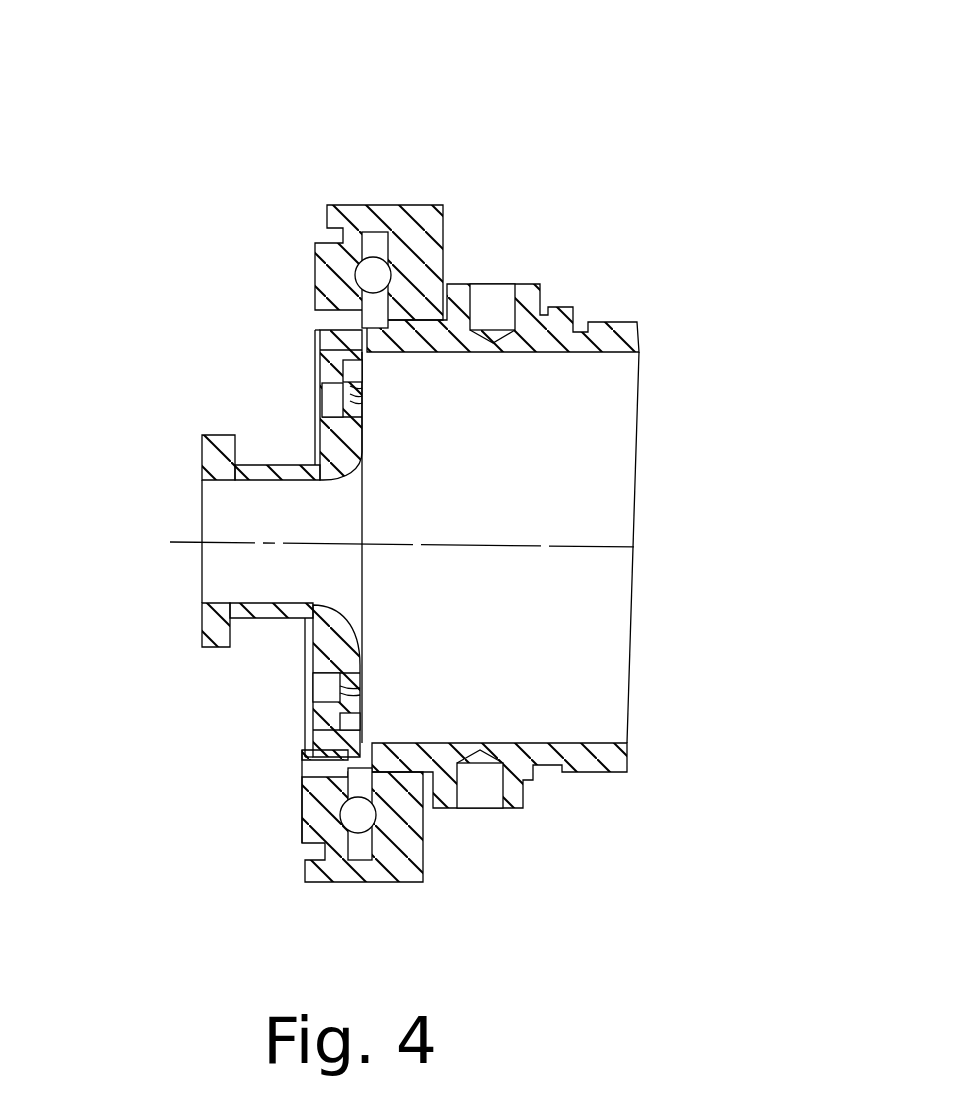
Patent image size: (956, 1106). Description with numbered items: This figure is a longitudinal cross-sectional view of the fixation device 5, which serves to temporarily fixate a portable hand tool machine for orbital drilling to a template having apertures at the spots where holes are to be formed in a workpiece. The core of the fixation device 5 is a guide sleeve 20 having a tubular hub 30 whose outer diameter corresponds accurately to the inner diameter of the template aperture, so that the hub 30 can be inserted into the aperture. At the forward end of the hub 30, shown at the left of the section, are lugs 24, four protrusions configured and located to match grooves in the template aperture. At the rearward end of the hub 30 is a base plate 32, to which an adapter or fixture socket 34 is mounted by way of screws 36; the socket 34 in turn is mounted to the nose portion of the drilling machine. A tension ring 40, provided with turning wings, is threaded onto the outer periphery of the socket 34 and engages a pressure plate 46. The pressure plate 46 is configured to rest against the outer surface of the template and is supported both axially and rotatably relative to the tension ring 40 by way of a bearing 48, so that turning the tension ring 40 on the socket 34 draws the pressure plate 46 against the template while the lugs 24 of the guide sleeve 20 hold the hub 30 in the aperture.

The fixation device 5 is at (399, 160).
The guide sleeve 20 is at (266, 632).
The lugs 24 is at (205, 633).
The tubular hub 30 is at (265, 472).
The base plate 32 is at (348, 432).
The fixture socket 34 is at (607, 320).
The screws 36 is at (352, 390).
The tension ring 40 is at (420, 232).
The pressure plate 46 is at (318, 812).
The bearing 48 is at (363, 818).